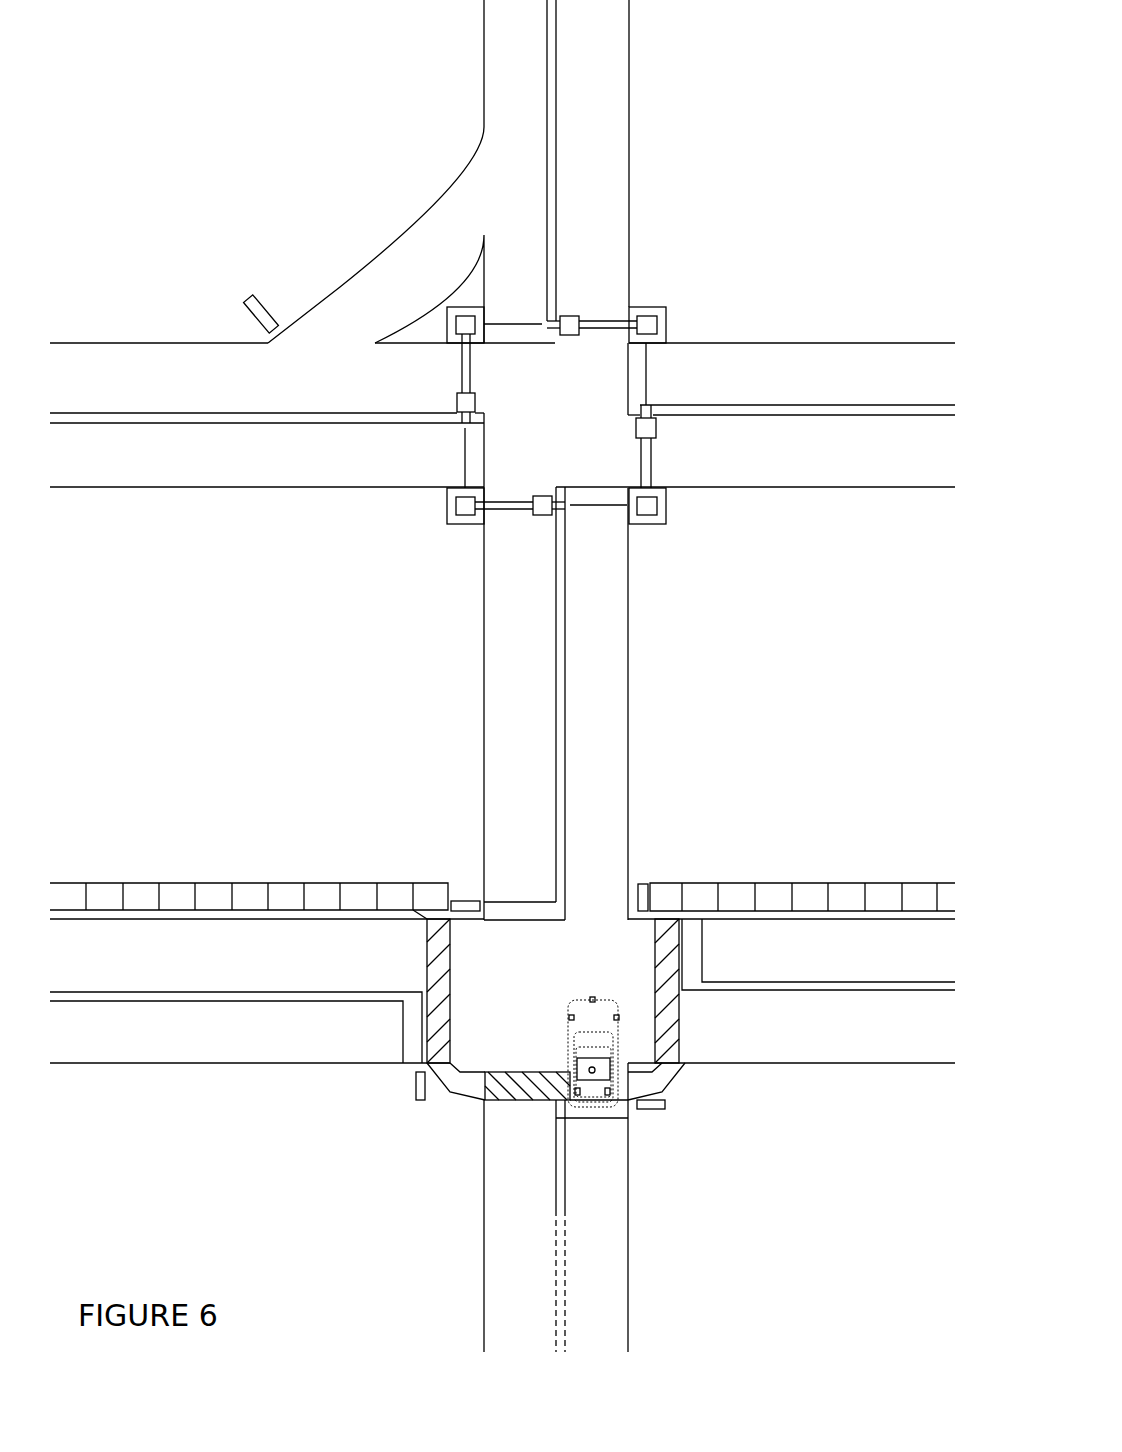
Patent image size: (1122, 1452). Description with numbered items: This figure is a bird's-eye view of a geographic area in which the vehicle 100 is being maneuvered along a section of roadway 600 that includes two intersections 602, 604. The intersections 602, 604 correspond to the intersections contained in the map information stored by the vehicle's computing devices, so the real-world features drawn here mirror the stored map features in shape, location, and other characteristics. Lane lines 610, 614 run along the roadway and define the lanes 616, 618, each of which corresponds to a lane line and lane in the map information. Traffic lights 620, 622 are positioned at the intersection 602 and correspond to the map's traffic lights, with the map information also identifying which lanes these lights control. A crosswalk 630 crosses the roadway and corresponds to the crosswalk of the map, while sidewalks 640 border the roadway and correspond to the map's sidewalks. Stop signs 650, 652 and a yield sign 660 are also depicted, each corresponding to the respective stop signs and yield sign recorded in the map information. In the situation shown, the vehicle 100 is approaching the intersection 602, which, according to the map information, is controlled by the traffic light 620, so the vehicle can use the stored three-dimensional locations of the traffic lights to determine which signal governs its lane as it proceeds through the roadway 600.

The vehicle 100 is at (620, 1057).
The section of roadway 600 is at (502, 676).
The intersection 602 is at (555, 414).
The intersection 604 is at (590, 999).
The lane line 610 is at (484, 680).
The lane line 614 is at (628, 563).
The lane 616 is at (187, 1170).
The lane 618 is at (524, 754).
The traffic light 620 is at (577, 312).
The traffic light 622 is at (533, 516).
The crosswalk 630 is at (485, 1080).
The sidewalks 640 is at (728, 882).
The stop sign 650 is at (452, 902).
The stop sign 652 is at (666, 1105).
The yield sign 660 is at (243, 308).